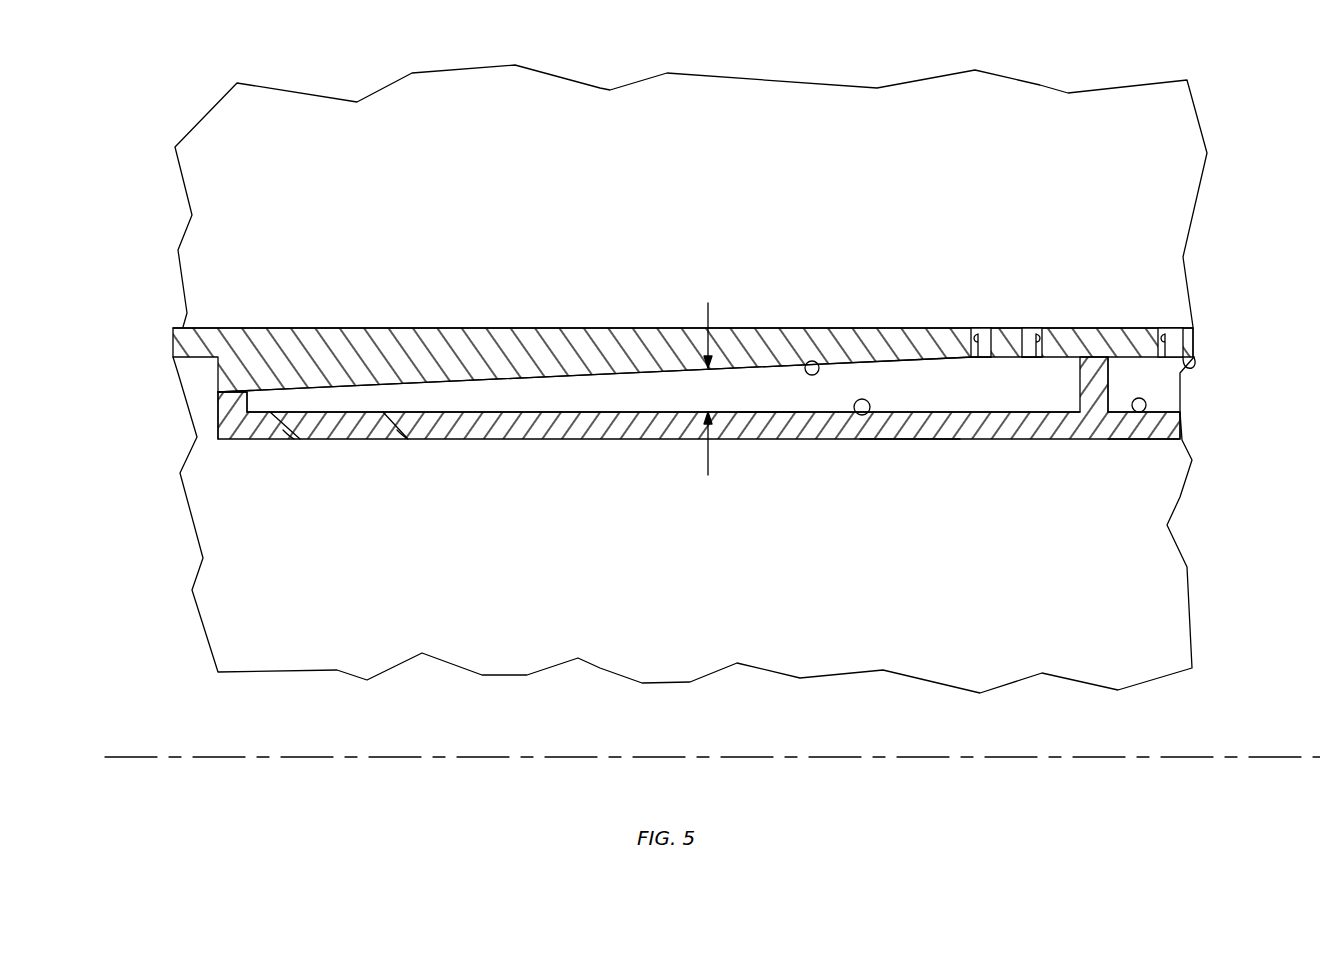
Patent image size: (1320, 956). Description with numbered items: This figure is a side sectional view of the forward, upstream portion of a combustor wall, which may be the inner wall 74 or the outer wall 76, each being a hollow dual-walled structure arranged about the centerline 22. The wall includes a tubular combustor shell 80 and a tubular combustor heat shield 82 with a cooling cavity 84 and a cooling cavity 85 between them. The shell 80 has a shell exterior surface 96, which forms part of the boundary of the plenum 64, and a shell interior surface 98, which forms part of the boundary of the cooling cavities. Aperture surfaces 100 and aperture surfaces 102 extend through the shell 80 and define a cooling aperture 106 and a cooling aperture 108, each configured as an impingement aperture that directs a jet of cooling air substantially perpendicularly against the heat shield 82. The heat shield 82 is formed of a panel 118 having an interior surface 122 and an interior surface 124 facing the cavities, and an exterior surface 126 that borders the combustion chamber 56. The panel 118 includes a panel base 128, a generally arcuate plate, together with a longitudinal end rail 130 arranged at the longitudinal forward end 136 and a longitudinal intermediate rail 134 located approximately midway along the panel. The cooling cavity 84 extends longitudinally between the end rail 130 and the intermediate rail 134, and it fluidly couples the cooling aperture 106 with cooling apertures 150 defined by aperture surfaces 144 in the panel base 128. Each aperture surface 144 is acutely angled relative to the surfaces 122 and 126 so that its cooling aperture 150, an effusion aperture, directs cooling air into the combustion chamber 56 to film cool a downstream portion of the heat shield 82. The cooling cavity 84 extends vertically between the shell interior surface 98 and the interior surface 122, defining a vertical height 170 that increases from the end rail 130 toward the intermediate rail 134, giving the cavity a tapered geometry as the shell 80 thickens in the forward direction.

The centerline 22 is at (1197, 763).
The combustion chamber 56 is at (1114, 657).
The plenum 64 is at (1126, 145).
The inner wall 74 is at (1240, 294).
The outer wall 76 is at (1222, 316).
The combustor shell 80 is at (530, 322).
The combustor heat shield 82 is at (699, 445).
The cooling cavity 84 is at (577, 397).
The cooling cavity 85 is at (1167, 392).
The shell exterior surface 96 is at (845, 327).
The shell interior surface 98 is at (807, 361).
The aperture surface 100 is at (975, 328).
The aperture surface 102 is at (1160, 328).
The cooling aperture 106 is at (1028, 358).
The cooling aperture 108 is at (1192, 365).
The panel 118 is at (516, 455).
The interior surface 122 is at (865, 415).
The interior surface 124 is at (1139, 412).
The exterior surface 126 is at (898, 440).
The panel base 128 is at (770, 432).
The longitudinal end rail 130 is at (228, 398).
The longitudinal intermediate rail 134 is at (1114, 458).
The longitudinal forward end 136 is at (218, 425).
The aperture surface 144 is at (298, 442).
The cooling aperture 150 is at (308, 442).
The vertical height 170 is at (708, 475).